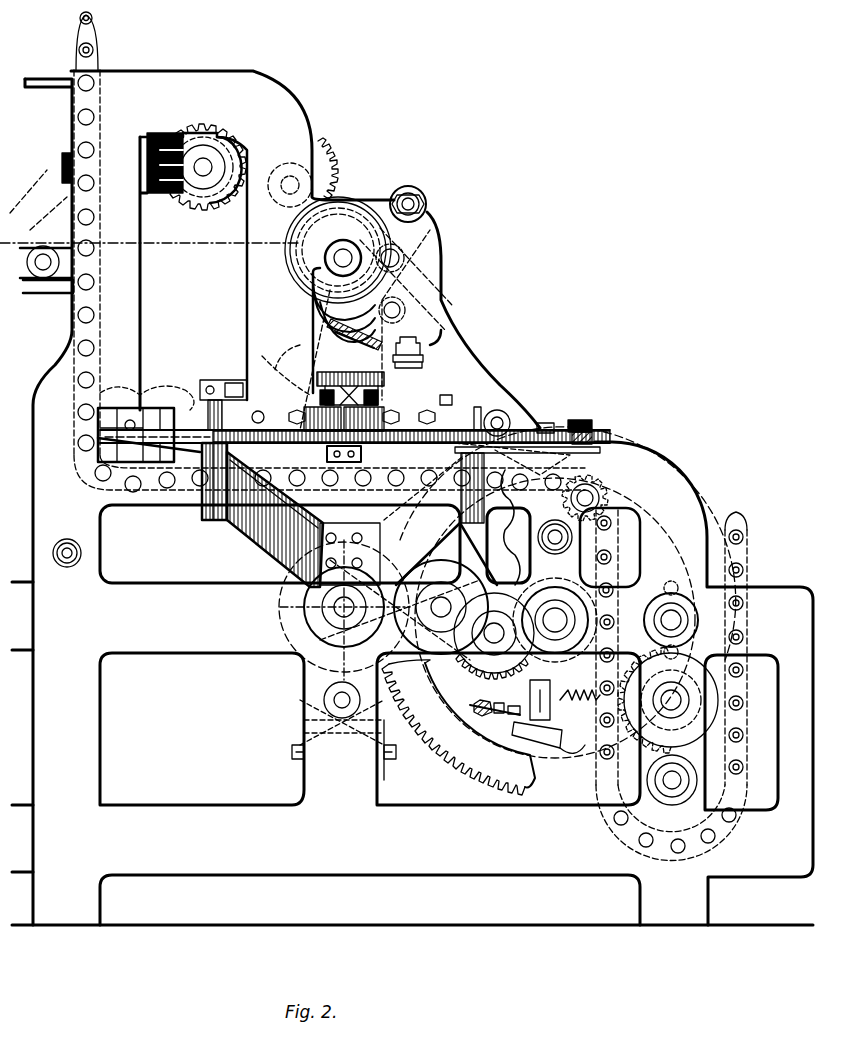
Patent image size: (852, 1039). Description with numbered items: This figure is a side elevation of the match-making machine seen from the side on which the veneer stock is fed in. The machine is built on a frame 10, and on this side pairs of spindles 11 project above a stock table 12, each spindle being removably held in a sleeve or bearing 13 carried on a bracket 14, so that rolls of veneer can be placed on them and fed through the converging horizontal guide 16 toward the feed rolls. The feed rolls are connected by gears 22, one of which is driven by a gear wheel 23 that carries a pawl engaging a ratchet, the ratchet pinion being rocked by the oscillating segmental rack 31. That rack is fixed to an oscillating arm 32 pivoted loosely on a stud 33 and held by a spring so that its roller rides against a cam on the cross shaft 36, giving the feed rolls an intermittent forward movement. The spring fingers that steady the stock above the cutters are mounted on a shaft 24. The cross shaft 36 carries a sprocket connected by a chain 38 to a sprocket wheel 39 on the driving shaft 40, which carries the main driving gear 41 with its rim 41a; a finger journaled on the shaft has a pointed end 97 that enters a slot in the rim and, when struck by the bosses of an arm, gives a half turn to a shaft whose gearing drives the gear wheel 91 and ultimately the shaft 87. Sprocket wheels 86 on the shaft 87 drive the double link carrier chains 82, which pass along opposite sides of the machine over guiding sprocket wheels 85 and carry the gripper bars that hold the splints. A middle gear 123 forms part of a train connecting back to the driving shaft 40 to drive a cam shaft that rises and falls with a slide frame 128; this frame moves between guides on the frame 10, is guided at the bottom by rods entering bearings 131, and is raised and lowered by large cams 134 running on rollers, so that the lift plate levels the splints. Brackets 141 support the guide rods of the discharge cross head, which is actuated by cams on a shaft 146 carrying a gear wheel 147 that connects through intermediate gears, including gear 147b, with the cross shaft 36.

The frame 10 is at (175, 592).
The spindles 11 is at (205, 403).
The stock table 12 is at (468, 455).
The sleeves or bearings 13 is at (205, 490).
The brackets 14 is at (248, 540).
The guide 16 is at (318, 444).
The gears 22 is at (320, 375).
The gear wheel 23 is at (478, 408).
The shaft 24 is at (282, 350).
The oscillating segment or rack 31 is at (330, 328).
The oscillating arm 32 is at (402, 312).
The stud 33 is at (428, 204).
The cross shaft 36 is at (346, 252).
The chain 38 is at (505, 398).
The sprocket wheel 39 is at (488, 703).
The driving shaft 40 is at (570, 615).
The gear wheel 41 is at (445, 768).
The rim 41a is at (480, 784).
The double link chains 82 is at (90, 60).
The sprocket wheels 85 is at (600, 548).
The sprocket wheels 86 is at (718, 758).
The shaft 87 is at (665, 795).
The gear wheel 91 is at (740, 696).
The flanged or pointed end 97 is at (555, 750).
The middle gear 123 is at (480, 662).
The slide frame 128 is at (575, 490).
The bearings 131 is at (448, 680).
The large cams 134 is at (300, 672).
The brackets 141 is at (152, 180).
The shaft 146 is at (203, 160).
The gear wheel 147 is at (190, 205).
The gear 147b is at (334, 170).